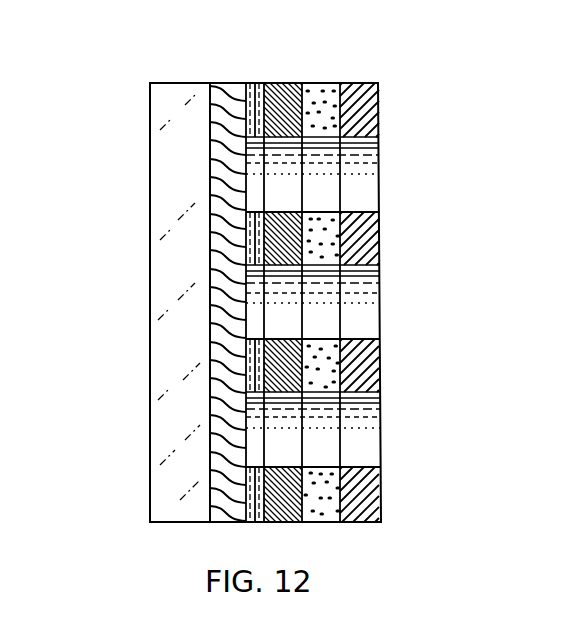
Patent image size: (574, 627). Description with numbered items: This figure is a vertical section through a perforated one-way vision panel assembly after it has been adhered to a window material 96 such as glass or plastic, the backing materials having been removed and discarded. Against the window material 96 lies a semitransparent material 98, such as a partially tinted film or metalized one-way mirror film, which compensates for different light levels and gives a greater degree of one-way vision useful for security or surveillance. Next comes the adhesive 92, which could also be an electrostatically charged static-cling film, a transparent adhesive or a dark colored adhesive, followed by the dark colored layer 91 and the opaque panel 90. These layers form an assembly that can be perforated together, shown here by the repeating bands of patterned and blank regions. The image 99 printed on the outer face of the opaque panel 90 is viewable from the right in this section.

The window material 96 is at (153, 119).
The semitransparent material 98 is at (223, 85).
The adhesive 92 is at (257, 85).
The dark colored layer 91 is at (293, 85).
The opaque panel 90 is at (325, 85).
The image 99 is at (378, 115).